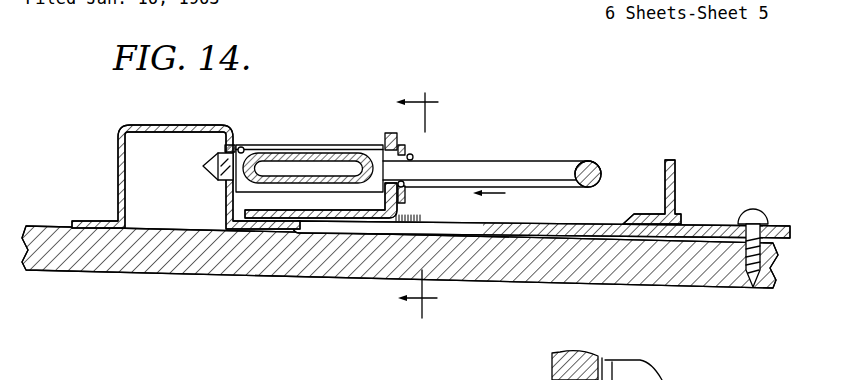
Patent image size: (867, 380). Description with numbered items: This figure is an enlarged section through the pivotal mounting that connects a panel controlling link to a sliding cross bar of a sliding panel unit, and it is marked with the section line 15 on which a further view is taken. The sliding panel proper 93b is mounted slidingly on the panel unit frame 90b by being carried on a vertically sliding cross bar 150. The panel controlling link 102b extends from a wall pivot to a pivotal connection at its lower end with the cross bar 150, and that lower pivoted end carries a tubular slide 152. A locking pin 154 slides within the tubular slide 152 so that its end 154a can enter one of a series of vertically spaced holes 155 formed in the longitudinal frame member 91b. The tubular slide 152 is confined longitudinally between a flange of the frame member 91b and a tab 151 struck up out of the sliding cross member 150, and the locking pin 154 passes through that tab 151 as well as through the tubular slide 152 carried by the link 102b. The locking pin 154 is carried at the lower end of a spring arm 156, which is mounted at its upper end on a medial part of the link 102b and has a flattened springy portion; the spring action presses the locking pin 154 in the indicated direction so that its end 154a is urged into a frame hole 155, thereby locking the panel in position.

The panel unit frame 90b is at (163, 120).
The longitudinal frame member 91b is at (190, 125).
The holes 155 is at (244, 150).
The tubular slide 152 is at (308, 147).
The panel controlling link 102b is at (332, 155).
The tab 151 is at (394, 133).
The locking pin 154 is at (412, 172).
The end of locking pin 154a is at (210, 170).
The spring arm 156 is at (598, 170).
The sliding cross bar 150 is at (605, 221).
The sliding panel 93b is at (520, 270).
The section line 15- 15 is at (404, 196).